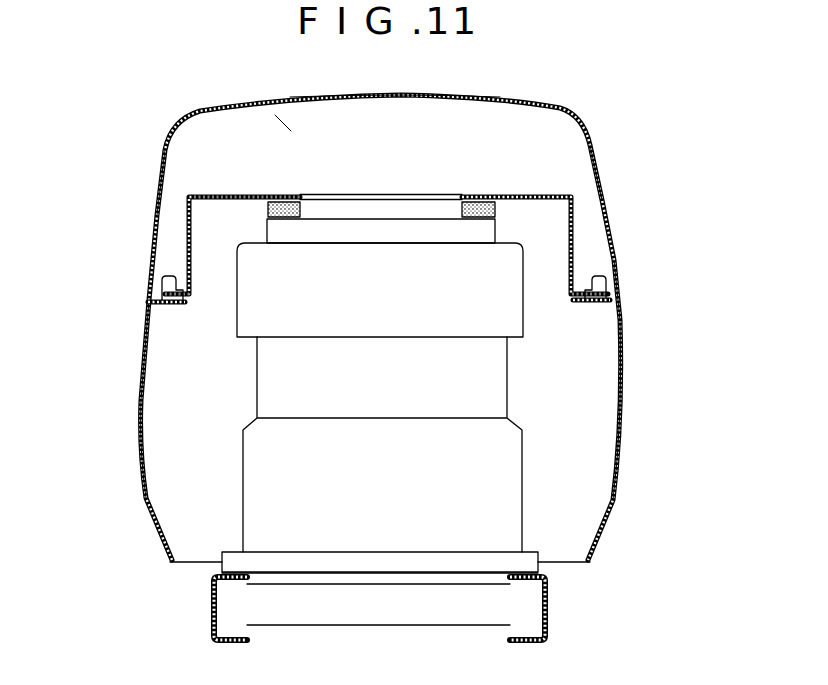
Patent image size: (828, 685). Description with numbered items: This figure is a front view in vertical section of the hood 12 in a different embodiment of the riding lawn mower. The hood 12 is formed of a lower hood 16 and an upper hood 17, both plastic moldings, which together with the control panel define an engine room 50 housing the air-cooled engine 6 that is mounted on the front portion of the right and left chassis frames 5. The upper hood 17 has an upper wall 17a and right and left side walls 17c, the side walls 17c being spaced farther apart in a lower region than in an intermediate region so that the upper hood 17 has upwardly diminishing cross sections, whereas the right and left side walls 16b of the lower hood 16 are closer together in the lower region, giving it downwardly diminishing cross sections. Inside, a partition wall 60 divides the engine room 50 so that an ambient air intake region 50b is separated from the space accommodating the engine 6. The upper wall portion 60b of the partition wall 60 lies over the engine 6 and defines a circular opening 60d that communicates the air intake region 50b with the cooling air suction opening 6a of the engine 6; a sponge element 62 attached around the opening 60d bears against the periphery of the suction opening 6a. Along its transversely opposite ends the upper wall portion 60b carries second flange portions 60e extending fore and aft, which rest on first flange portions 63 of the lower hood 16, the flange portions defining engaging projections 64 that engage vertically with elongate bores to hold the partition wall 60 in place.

The chassis frame 5 is at (213, 608).
The air-cooled engine 6 is at (392, 353).
The cooling air suction opening 6a is at (352, 214).
The hood 12 is at (146, 153).
The lower hood 16 is at (624, 347).
The side wall of the lower hood 16b is at (619, 433).
The upper hood 17 is at (600, 166).
The upper wall 17a is at (548, 105).
The side wall of the upper hood 17c is at (606, 217).
The engine room 50 is at (291, 131).
The ambient air intake region 50b is at (283, 123).
The partition wall 60 is at (379, 211).
The upper wall portion 60b is at (233, 194).
The circular opening 60d is at (418, 190).
The second flange portion 60e is at (578, 288).
The sponge element 62 is at (265, 208).
The first flange portion 63 is at (588, 300).
The engaging projection 64 is at (597, 276).